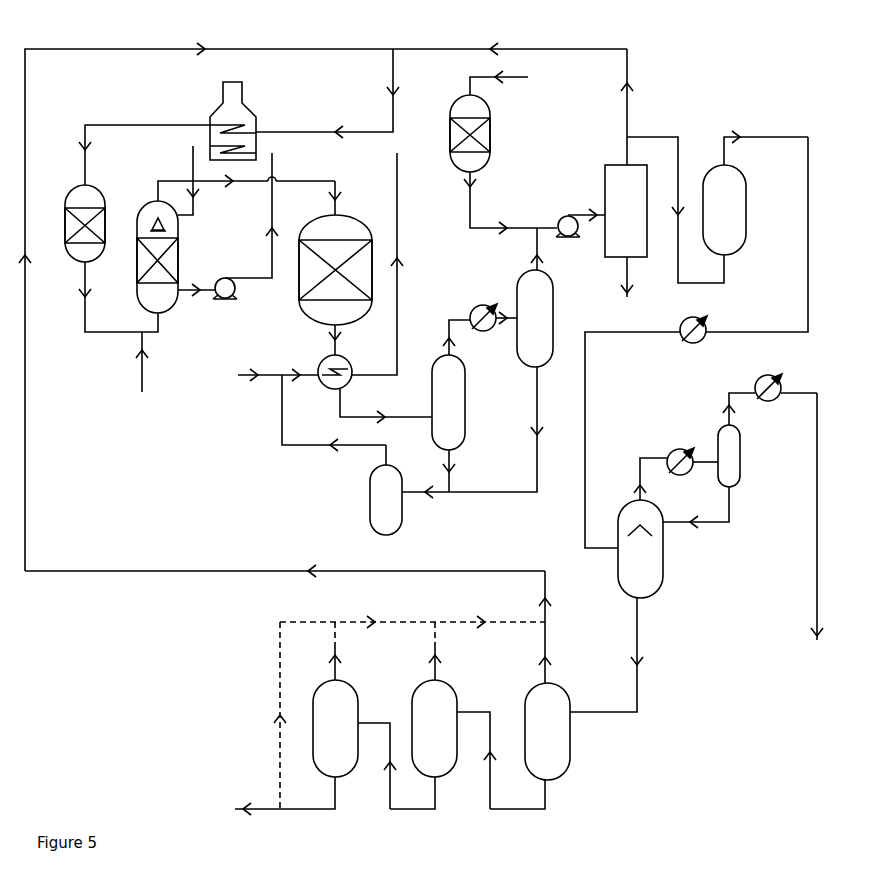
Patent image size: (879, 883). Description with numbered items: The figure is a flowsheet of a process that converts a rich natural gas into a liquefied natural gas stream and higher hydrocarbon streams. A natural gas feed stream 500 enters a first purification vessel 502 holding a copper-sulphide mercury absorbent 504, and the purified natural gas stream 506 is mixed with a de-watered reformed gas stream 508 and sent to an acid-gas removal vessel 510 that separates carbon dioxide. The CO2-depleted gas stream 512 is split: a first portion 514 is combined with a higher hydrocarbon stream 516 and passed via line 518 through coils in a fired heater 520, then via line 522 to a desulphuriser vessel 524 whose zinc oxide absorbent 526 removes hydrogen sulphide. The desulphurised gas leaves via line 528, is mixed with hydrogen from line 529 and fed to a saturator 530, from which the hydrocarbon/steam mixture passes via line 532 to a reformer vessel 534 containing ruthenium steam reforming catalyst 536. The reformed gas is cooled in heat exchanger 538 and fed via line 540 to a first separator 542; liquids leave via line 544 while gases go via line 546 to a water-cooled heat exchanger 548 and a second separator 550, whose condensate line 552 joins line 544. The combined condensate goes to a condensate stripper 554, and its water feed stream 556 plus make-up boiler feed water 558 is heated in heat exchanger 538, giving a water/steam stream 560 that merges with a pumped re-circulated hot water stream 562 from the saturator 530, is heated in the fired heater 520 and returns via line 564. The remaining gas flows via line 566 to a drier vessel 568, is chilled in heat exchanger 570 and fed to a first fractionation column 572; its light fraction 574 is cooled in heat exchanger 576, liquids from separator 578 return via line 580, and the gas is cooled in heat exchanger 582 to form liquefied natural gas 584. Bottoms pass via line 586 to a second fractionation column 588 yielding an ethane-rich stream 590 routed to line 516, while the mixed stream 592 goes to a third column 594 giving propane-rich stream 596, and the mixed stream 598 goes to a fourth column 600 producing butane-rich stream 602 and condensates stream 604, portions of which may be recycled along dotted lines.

The natural gas feed stream 500 is at (528, 77).
The first purification vessel 502 is at (492, 105).
The mercury absorbent 504 is at (492, 142).
The purified natural gas stream 506 is at (472, 204).
The de-watered reformed gas stream 508 is at (535, 245).
The acid-gas removal vessel 510 is at (604, 185).
The CO2-depleted gas stream 512 is at (626, 155).
The first portion 514 is at (626, 112).
The higher hydrocarbon stream 516 is at (300, 49).
The line 518 is at (320, 132).
The fired heater 520 is at (215, 105).
The line 522 is at (128, 122).
The desulphuriser vessel 524 is at (80, 196).
The zinc oxide desulphurisation absorbent 526 is at (102, 215).
The line 528 is at (128, 337).
The hydrogen stream line 529 is at (140, 375).
The saturator 530 is at (178, 258).
The line 532 is at (337, 196).
The reformer vessel 534 is at (304, 225).
The steam reforming catalyst 536 is at (300, 283).
The heat exchanger 538 is at (320, 359).
The line 540 is at (372, 417).
The first separator 542 is at (466, 392).
The condensate line 544 is at (452, 460).
The line 546 is at (448, 327).
The water-cooled heat exchanger 548 is at (478, 306).
The second separator 550 is at (554, 285).
The condensate line 552 is at (538, 414).
The condensate stripper 554 is at (400, 512).
The water feed stream 556 is at (282, 447).
The make-up boiler feed water 558 is at (248, 375).
The heated water/steam stream 560 is at (398, 231).
The re-circulated hot water stream 562 is at (270, 205).
The line 564 is at (190, 167).
The line 566 is at (655, 137).
The drier vessel 568 is at (747, 173).
The heat exchanger 570 is at (687, 320).
The first fractionation column 572 is at (626, 521).
The light fraction 574 is at (648, 457).
The heat exchanger 576 is at (676, 449).
The separator 578 is at (741, 446).
The line 580 is at (731, 508).
The heat exchanger 582 is at (756, 378).
The liquefied natural gas 584 is at (817, 570).
The line 586 is at (640, 637).
The second fractionation column 588 is at (571, 757).
The ethane-rich stream 590 is at (547, 668).
The mixed stream 592 is at (530, 812).
The third column 594 is at (458, 700).
The propane-rich stream 596 is at (440, 671).
The mixed stream 598 is at (393, 812).
The fourth column 600 is at (358, 702).
The butane-rich stream 602 is at (338, 671).
The condensates stream 604 is at (310, 811).